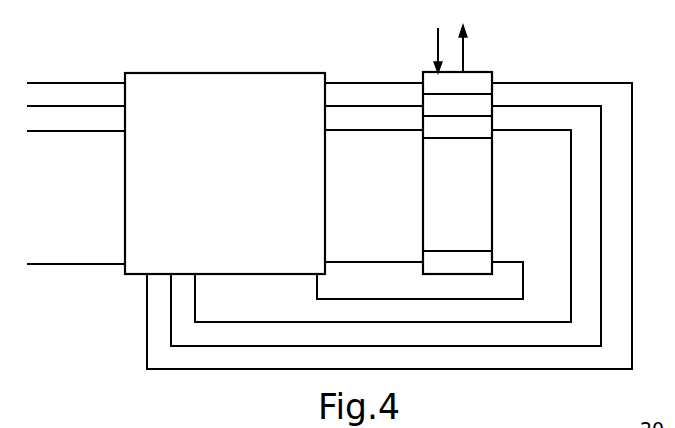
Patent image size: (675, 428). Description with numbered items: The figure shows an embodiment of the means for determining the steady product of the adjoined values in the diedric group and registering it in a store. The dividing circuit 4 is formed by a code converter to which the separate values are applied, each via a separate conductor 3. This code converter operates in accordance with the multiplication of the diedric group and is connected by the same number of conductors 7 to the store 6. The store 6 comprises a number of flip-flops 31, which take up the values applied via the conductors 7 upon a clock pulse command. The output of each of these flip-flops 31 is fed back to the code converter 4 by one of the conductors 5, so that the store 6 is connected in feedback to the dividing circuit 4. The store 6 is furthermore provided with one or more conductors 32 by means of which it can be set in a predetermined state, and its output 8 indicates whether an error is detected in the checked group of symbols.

The conductor 3 is at (57, 106).
The dividing circuit 4 is at (265, 88).
The conductors 5 is at (450, 299).
The store 6 is at (473, 67).
The conductors 7 is at (365, 130).
The output 8 is at (463, 50).
The flip-flops 31 is at (480, 128).
The conductors 32 is at (438, 52).